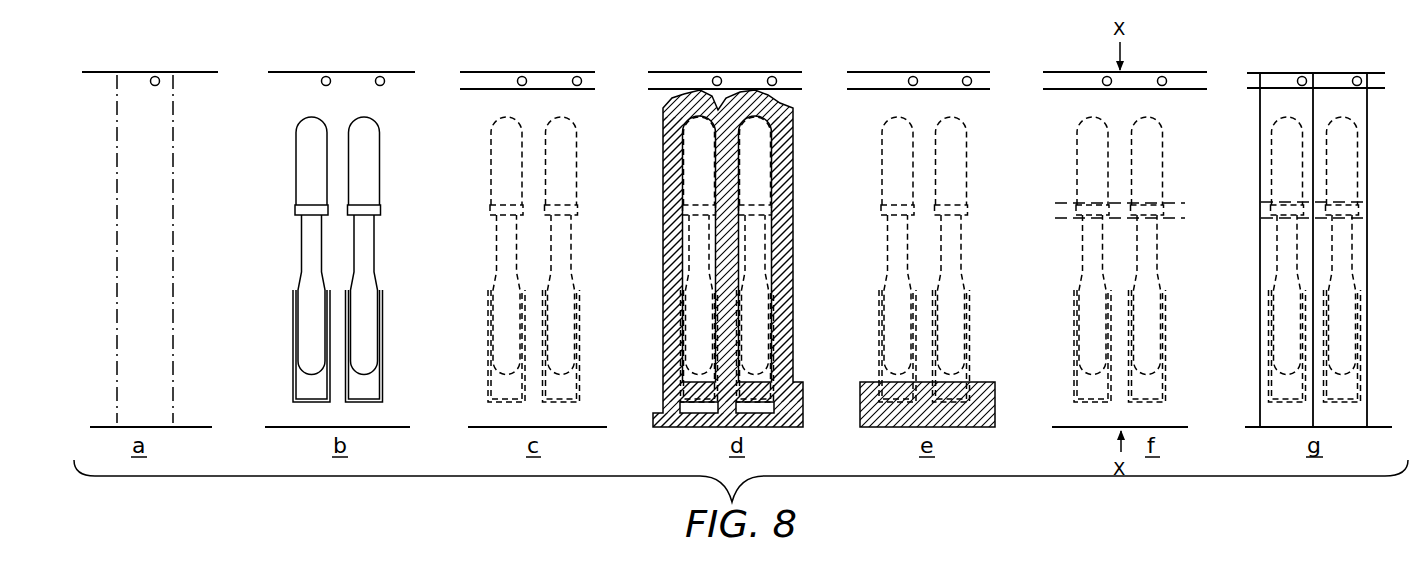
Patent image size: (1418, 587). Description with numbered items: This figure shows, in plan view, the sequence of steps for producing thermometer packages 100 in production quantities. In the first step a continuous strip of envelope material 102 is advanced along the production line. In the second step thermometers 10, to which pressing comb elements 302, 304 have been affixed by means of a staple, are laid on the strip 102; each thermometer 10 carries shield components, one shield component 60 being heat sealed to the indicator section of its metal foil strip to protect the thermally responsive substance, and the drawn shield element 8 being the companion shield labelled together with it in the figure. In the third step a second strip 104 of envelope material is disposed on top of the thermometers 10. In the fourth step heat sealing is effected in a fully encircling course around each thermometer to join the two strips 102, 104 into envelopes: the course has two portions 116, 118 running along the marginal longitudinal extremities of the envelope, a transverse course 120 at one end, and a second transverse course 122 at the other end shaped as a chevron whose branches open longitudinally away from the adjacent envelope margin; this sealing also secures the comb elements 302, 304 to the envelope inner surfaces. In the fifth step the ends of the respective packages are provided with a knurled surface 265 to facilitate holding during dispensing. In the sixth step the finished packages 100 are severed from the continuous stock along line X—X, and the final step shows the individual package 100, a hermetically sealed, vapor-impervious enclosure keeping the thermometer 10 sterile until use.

The thermometer 10 is at (324, 254).
The holder 8 is at (387, 374).
The shield component 60 is at (368, 346).
The thermometer package 100 is at (1315, 150).
The envelope strip 102 is at (190, 417).
The second envelope strip 104 is at (540, 100).
The heat seal course portion 116 is at (683, 250).
The heat seal course portion 118 is at (786, 244).
The transverse course 120 is at (697, 420).
The second transverse course 122 is at (780, 100).
The knurled surface 265 is at (968, 413).
The pressing comb element 302 is at (304, 227).
The pressing comb element 304 is at (300, 208).